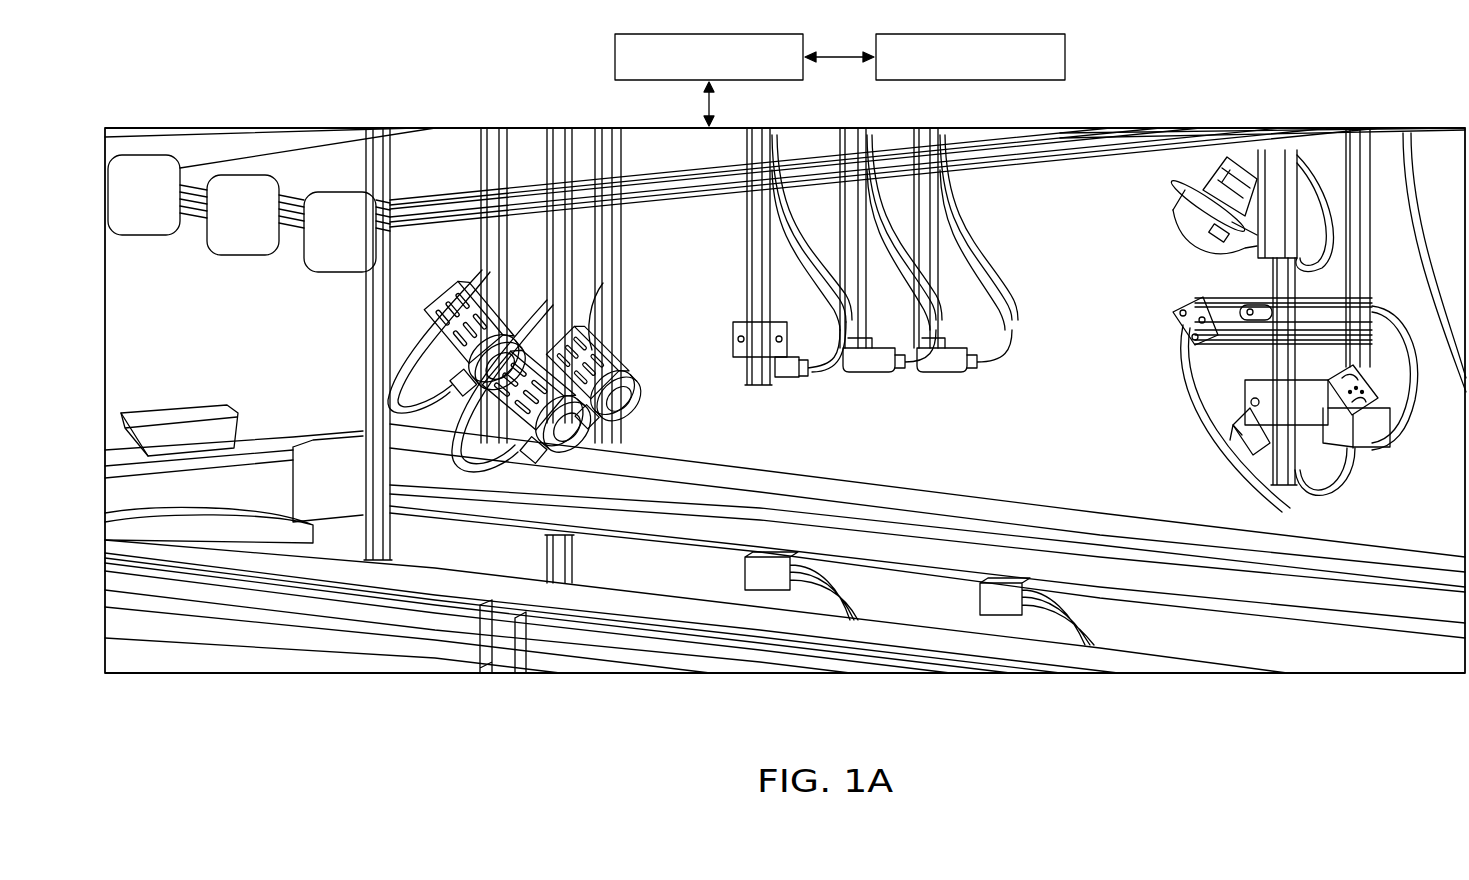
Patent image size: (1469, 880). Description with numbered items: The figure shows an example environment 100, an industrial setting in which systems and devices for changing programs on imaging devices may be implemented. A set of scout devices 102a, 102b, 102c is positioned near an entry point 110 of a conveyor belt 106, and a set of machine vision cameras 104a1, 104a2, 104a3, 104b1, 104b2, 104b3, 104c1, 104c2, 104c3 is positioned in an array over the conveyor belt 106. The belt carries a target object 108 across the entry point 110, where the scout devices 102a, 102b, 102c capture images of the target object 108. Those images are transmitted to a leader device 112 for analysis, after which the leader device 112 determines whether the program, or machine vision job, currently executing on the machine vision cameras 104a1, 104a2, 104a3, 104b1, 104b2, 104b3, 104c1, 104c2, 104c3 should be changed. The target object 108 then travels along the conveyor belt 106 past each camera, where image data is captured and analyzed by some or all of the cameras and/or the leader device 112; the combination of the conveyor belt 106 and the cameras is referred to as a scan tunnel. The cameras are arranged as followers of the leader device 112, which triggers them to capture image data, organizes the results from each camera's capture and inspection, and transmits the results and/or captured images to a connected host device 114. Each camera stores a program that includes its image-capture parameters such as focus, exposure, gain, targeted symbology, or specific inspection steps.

The example environment 100 is at (1288, 56).
The scout device 102a is at (148, 155).
The scout device 102b is at (243, 175).
The scout device 102c is at (340, 192).
The machine vision camera 104a1 is at (438, 320).
The machine vision camera 104a2 is at (632, 423).
The machine vision camera 104a3 is at (626, 375).
The machine vision camera 104b1 is at (790, 378).
The machine vision camera 104b2 is at (860, 372).
The machine vision camera 104b3 is at (936, 372).
The machine vision camera 104c1 is at (1182, 212).
The machine vision camera 104c2 is at (1185, 300).
The machine vision camera 104c3 is at (1243, 425).
The conveyor belt 106 is at (1040, 506).
The target object 108 is at (182, 404).
The entry point 110 is at (285, 436).
The leader device 112 is at (613, 57).
The host device 114 is at (1067, 57).